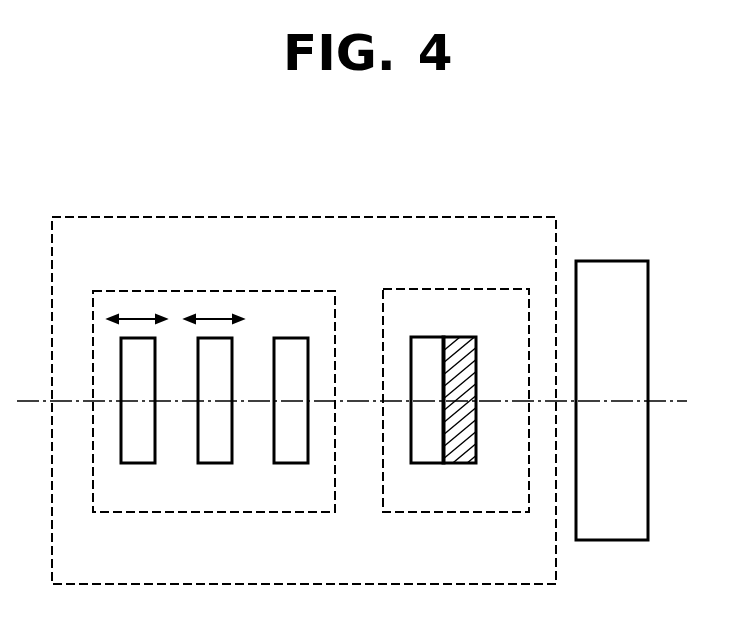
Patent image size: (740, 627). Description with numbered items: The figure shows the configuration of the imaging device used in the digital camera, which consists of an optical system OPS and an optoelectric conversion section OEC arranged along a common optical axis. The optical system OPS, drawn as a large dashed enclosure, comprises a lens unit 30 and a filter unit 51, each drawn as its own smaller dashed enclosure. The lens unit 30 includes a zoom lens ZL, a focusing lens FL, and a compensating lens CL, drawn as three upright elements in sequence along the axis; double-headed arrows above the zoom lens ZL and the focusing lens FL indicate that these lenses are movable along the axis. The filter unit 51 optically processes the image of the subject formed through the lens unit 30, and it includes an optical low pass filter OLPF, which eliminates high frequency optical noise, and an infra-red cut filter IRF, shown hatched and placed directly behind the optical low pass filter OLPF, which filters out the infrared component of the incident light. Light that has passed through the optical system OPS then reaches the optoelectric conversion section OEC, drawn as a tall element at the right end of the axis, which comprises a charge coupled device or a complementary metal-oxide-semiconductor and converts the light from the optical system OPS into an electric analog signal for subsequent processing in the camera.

The lens unit 30 is at (214, 290).
The filter unit 51 is at (460, 288).
The optical system OPS is at (302, 216).
The zoom lens ZL is at (135, 464).
The focusing lens FL is at (213, 464).
The compensating lens CL is at (288, 464).
The optical low pass filter OLPF is at (421, 464).
The infra-red cut filter IRF is at (462, 464).
The optoelectric conversion section OEC is at (612, 261).